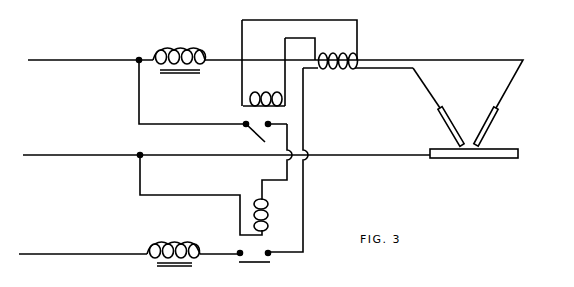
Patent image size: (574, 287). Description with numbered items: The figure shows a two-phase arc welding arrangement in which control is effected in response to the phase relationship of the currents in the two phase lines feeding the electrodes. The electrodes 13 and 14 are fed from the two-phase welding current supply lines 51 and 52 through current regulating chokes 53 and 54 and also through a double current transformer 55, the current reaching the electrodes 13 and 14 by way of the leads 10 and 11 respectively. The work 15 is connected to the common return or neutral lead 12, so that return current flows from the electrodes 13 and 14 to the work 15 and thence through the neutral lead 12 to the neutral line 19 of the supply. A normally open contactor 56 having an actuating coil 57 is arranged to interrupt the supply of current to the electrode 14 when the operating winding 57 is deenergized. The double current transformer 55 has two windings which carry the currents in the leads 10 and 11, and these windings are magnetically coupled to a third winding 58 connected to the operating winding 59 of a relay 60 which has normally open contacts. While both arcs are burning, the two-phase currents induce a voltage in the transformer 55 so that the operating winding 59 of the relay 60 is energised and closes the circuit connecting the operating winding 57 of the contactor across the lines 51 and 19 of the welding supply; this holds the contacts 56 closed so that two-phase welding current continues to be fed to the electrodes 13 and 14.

The lead 10 is at (408, 60).
The lead 11 is at (410, 72).
The common return or neutral lead 12 is at (389, 156).
The electrode 13 is at (487, 131).
The electrode 14 is at (443, 126).
The work 15 is at (465, 158).
The neutral line 19 is at (52, 156).
The two-phase welding current supply line 51 is at (48, 60).
The two-phase welding current supply line 52 is at (53, 254).
The current regulating choke 53 is at (162, 53).
The current regulating choke 54 is at (158, 248).
The double current transformer 55 is at (345, 56).
The contactor 56 is at (248, 262).
The actuating coil 57 is at (267, 222).
The third winding 58 is at (333, 70).
The operating winding 59 is at (252, 95).
The relay 60 is at (258, 130).